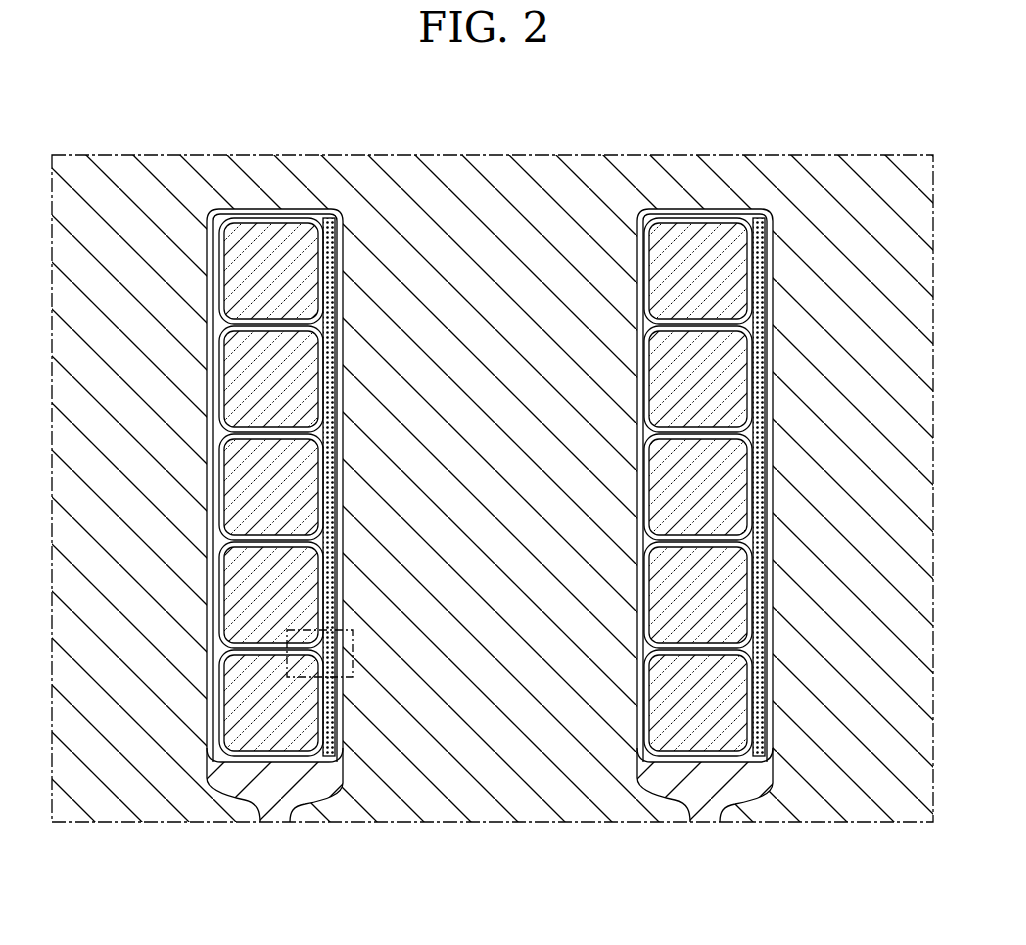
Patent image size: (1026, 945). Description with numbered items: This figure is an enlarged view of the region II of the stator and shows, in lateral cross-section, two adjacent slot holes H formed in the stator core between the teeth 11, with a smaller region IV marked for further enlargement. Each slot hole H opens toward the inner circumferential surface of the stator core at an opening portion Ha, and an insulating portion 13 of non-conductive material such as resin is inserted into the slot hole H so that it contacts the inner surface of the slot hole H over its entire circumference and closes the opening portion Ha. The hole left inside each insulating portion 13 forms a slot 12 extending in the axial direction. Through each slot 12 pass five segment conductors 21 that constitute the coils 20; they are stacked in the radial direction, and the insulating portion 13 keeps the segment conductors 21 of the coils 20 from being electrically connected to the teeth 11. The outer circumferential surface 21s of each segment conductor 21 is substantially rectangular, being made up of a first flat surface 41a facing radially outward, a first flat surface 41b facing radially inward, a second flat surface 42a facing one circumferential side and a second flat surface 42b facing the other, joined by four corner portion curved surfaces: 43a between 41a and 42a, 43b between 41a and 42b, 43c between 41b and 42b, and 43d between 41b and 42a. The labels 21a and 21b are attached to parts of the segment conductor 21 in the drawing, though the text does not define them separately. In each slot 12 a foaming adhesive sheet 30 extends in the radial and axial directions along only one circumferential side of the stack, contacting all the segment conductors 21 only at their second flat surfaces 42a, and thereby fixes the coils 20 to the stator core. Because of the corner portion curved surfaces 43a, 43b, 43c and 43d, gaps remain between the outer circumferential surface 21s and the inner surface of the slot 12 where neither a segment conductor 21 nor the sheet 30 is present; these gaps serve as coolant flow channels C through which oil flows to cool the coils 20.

The tooth 11 is at (152, 728).
The slot 12 is at (227, 370).
The insulating portion 13 is at (238, 778).
The opening portion Ha is at (290, 817).
The coil 20 is at (236, 202).
The segment conductor 21 is at (367, 107).
The cell body 21a is at (277, 258).
The cell wall 21b is at (269, 212).
The outer circumferential surface 21s is at (275, 312).
The foaming adhesive sheet 30 is at (347, 262).
The first flat surface 41a is at (282, 424).
The first flat surface 41b is at (272, 548).
The second flat surface 42a is at (333, 490).
The second flat surface 42b is at (227, 487).
The corner portion curved surface 43a is at (325, 438).
The corner portion curved surface 43b is at (227, 430).
The corner portion curved surface 43c is at (227, 537).
The corner portion curved surface 43d is at (323, 553).
The coolant flow channel C is at (763, 758).
The slot hole H is at (232, 680).
The region II is at (81, 154).
The detail region IV is at (287, 635).